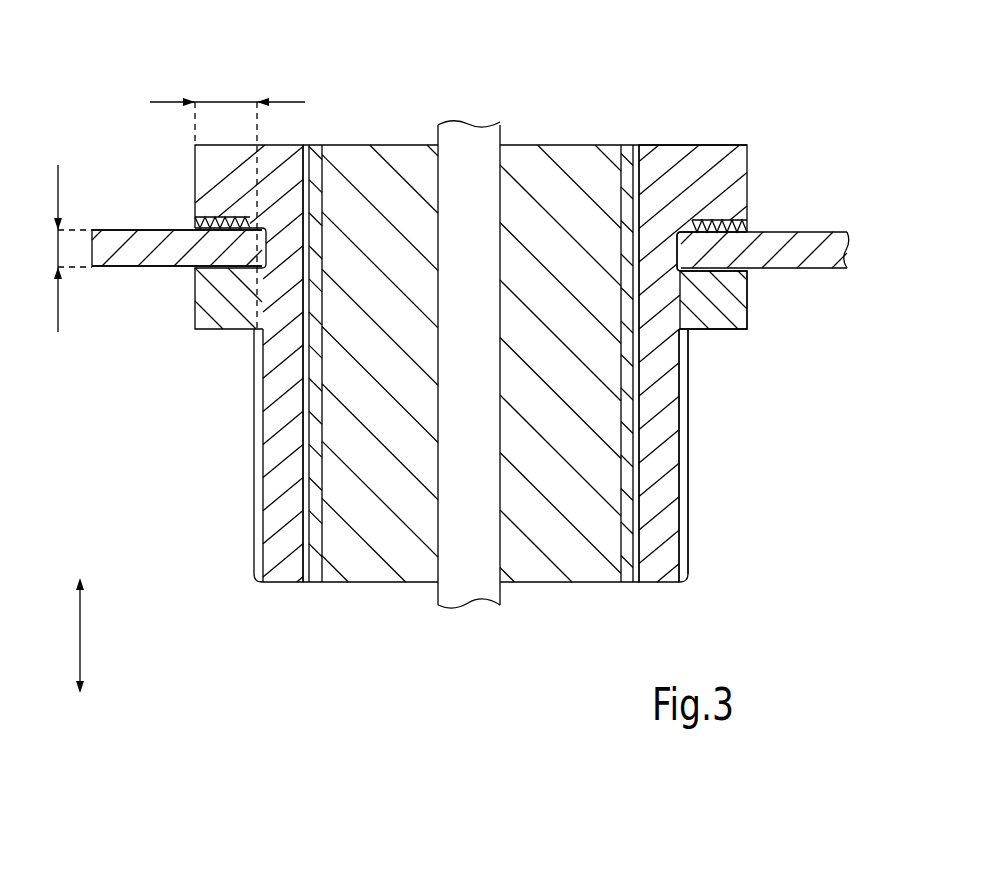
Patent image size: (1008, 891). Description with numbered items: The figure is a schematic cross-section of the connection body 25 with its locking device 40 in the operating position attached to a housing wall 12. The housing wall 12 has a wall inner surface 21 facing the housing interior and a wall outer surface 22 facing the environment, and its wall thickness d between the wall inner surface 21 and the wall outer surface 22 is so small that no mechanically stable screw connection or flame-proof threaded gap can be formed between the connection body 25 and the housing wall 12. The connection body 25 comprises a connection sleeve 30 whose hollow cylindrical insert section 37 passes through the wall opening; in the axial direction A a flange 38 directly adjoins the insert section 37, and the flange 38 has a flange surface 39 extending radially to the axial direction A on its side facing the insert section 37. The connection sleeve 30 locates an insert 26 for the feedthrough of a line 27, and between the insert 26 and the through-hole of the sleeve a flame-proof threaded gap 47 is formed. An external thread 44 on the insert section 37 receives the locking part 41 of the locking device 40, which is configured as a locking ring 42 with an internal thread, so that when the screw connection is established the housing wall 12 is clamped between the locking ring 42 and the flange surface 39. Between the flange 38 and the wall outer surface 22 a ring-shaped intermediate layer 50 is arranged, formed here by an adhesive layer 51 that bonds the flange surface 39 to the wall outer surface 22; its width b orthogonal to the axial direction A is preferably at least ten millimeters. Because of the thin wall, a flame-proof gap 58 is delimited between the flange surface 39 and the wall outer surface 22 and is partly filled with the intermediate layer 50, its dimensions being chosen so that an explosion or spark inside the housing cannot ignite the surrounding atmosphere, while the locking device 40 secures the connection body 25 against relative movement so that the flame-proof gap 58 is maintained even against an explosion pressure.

The housing wall 12 is at (485, 244).
The wall inner surface 21 is at (125, 268).
The wall outer surface 22 is at (123, 228).
The connection body 25 is at (738, 83).
The connection sleeve 30 is at (701, 121).
The insert 26 is at (563, 141).
The line 27 is at (483, 593).
The insert section 37 is at (226, 436).
The flange 38 is at (733, 173).
The flange surface 39 is at (705, 236).
The locking device 40 is at (782, 344).
The locking part 41 is at (770, 344).
The locking ring 42 is at (733, 328).
The external thread 44 is at (684, 490).
The flame-proof threaded gap 47 is at (303, 533).
The intermediate layer 50 is at (777, 200).
The adhesive layer 51 is at (744, 227).
The flame-proof gap 58 is at (191, 220).
The width of intermediate layer b is at (224, 102).
The wall thickness d is at (57, 252).
The axial direction A is at (80, 633).